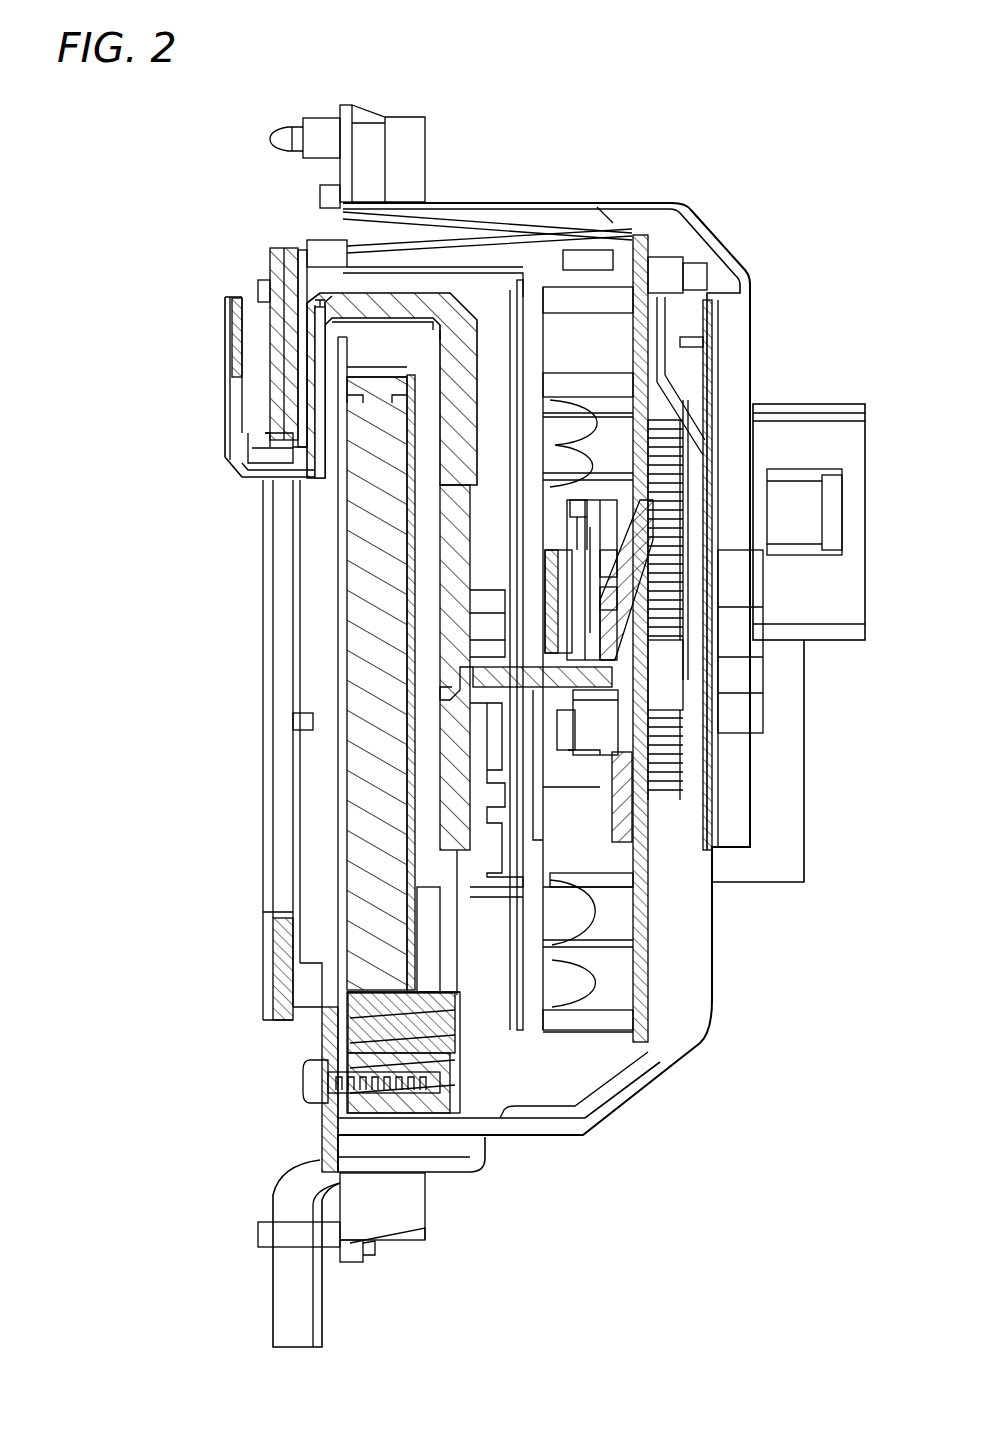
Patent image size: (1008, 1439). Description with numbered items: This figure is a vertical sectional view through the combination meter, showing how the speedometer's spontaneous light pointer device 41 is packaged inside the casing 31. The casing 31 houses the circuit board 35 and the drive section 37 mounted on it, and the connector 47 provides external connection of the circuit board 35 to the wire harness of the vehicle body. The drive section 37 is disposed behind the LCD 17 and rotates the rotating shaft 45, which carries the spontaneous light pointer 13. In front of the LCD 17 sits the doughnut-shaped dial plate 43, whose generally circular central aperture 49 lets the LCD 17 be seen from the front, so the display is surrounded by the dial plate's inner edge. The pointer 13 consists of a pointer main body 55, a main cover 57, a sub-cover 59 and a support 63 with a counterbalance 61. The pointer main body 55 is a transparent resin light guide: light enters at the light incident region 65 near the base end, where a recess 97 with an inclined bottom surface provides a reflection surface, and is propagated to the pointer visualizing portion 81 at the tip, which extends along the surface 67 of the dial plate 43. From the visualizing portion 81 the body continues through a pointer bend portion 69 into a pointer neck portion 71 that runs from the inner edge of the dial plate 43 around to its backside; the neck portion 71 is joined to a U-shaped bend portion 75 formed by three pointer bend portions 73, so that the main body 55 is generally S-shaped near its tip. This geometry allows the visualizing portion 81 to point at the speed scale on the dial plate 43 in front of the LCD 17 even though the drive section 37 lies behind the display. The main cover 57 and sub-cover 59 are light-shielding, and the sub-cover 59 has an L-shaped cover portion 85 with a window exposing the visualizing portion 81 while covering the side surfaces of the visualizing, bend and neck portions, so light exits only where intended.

The spontaneous light pointer 13 is at (208, 463).
The LCD 17 is at (380, 650).
The casing 31 is at (676, 248).
The circuit board 35 is at (623, 927).
The drive section 37 is at (578, 760).
The spontaneous light pointer device 41 is at (488, 586).
The dial plate 43 is at (272, 940).
The rotating shaft 45 is at (620, 693).
The connector 47 is at (818, 437).
The aperture 49 is at (262, 482).
The pointer main body 55 is at (363, 330).
The main cover 57 is at (447, 370).
The sub-cover 59 is at (230, 474).
The counterbalance 61 is at (445, 948).
The support 63 is at (480, 857).
The light incident region 65 is at (433, 690).
The surface 67 is at (277, 345).
The pointer bend portion 69 is at (242, 463).
The pointer neck portion 71 is at (306, 482).
The pointer bend portions 73 is at (432, 302).
The U-shaped bend portion 75 is at (477, 306).
The pointer visualizing portion 81 is at (246, 400).
The L-shaped cover portion 85 is at (237, 395).
The recess 97 is at (435, 696).